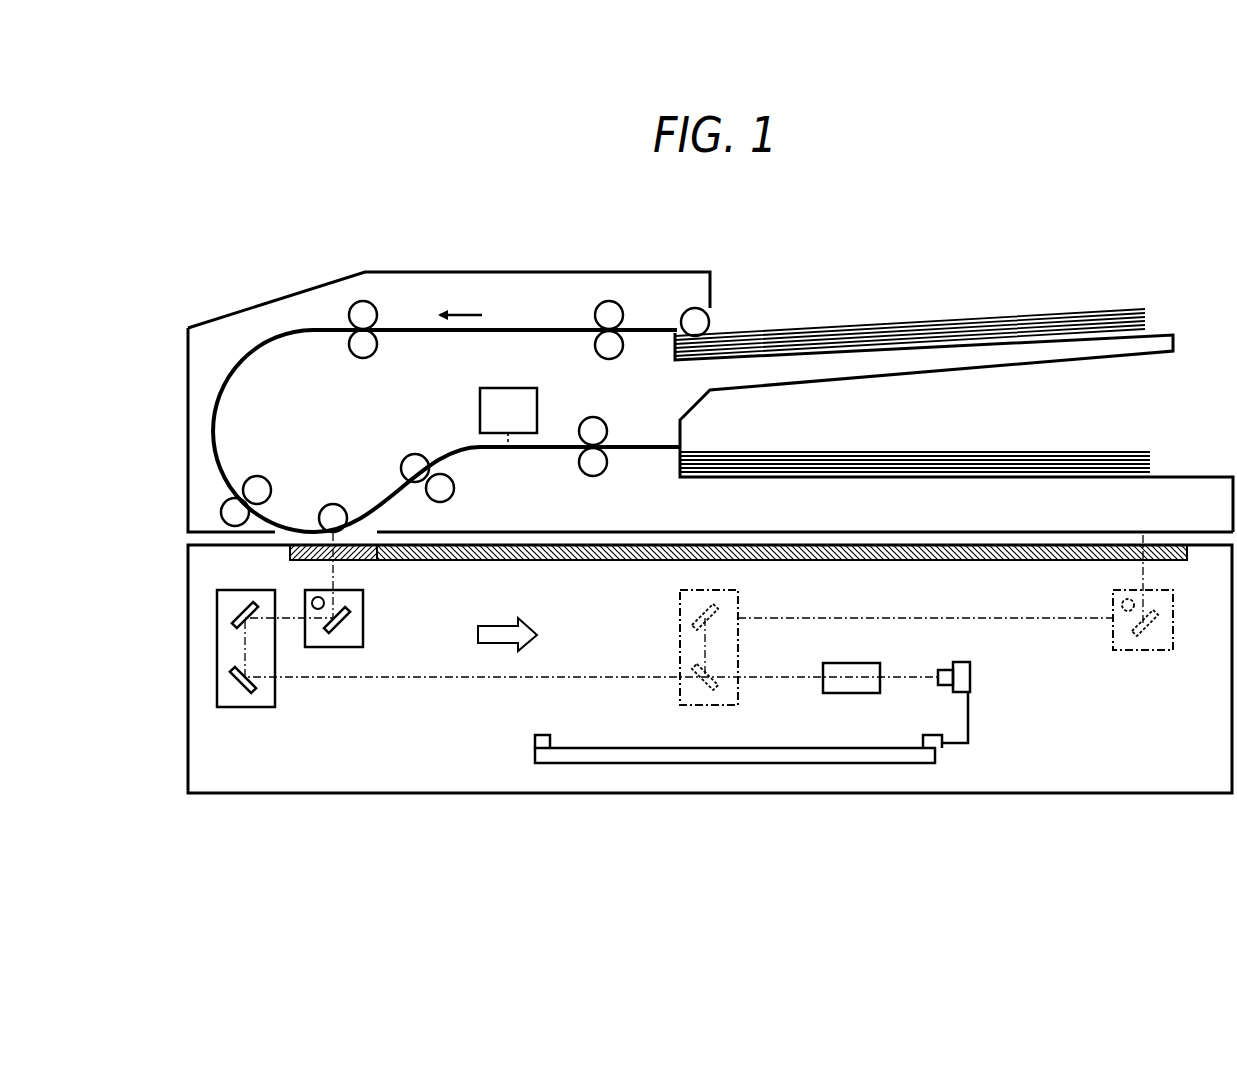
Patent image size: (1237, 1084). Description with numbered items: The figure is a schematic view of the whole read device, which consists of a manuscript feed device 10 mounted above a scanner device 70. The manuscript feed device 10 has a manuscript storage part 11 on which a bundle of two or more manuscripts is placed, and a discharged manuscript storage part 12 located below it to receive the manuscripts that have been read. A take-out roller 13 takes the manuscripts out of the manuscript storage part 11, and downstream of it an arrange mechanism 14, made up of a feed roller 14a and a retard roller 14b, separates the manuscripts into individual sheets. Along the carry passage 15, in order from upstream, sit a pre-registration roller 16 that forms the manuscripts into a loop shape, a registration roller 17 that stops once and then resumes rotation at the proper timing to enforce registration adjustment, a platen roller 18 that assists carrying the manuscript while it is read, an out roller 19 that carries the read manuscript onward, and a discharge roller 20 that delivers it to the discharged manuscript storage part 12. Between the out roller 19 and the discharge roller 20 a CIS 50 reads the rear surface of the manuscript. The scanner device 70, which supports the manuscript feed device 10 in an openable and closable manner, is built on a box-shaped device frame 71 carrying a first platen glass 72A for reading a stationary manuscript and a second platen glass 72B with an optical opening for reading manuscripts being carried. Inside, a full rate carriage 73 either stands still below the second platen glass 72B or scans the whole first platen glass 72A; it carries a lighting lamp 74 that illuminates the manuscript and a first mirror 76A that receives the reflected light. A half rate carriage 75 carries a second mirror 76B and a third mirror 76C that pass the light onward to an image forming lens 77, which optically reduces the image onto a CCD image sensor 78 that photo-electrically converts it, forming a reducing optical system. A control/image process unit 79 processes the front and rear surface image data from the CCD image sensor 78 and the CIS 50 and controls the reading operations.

The manuscript feed device 10 is at (1083, 278).
The manuscript storage part 11 is at (1000, 363).
The discharged manuscript storage part 12 is at (1203, 477).
The take-out roller 13 is at (700, 322).
The arrange mechanism 14 is at (606, 294).
The feed roller 14a is at (608, 315).
The retard roller 14b is at (600, 345).
The carry passage 15 is at (508, 330).
The pre-registration roller 16 is at (360, 312).
The registration roller 17 is at (257, 490).
The platen roller 18 is at (335, 519).
The out roller 19 is at (413, 468).
The discharge roller 20 is at (593, 464).
The CIS (Contact Image Sensor) 50 is at (537, 418).
The scanner device 70 is at (710, 721).
The device frame 71 is at (968, 793).
The first platen glass 72A is at (940, 561).
The second platen glass 72B is at (358, 561).
The full rate carriage 73 is at (717, 651).
The lighting lamp 74 is at (316, 600).
The half rate carriage 75 is at (468, 657).
The first mirror 76A is at (343, 632).
The second mirror 76B is at (245, 611).
The third mirror 76C is at (247, 691).
The image forming lens 77 is at (855, 693).
The CCD image sensor 78 is at (972, 678).
The control/image process unit 79 is at (737, 764).